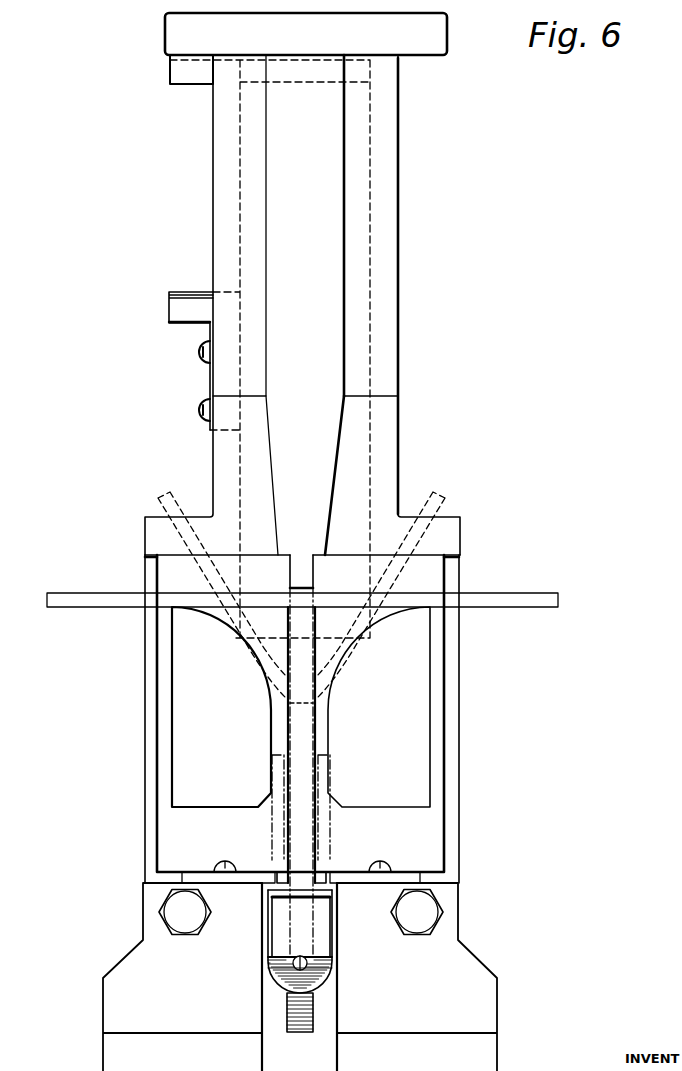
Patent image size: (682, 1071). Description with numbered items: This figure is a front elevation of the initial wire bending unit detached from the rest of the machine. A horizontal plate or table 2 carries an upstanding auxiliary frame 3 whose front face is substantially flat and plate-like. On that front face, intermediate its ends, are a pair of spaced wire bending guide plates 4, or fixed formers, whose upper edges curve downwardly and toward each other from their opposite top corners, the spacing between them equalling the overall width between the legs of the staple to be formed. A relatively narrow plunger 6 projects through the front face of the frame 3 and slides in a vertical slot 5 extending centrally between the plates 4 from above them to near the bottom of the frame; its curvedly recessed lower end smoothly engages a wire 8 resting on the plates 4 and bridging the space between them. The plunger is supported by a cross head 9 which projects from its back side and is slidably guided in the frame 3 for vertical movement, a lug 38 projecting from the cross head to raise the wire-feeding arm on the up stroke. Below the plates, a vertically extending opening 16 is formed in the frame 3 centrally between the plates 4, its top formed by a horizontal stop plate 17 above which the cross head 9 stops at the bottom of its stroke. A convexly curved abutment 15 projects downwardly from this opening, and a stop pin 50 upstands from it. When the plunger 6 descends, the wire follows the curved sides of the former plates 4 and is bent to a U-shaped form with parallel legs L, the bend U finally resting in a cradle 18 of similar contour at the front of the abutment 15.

The horizontal plate or table 2 is at (57, 1070).
The auxiliary frame 3 is at (460, 811).
The wire bending guide plates 4 is at (185, 710).
The vertical slot 5 is at (288, 822).
The plunger 6 is at (302, 567).
The wire 8 is at (532, 598).
The cross head 9 is at (372, 440).
The convexly curved abutment 15 is at (326, 976).
The vertically extending opening 16 is at (300, 923).
The horizontal stop plate 17 is at (322, 891).
The cradle 18 is at (282, 986).
The lug 38 is at (183, 308).
The stop pin 50 is at (306, 962).
The parallel legs L is at (272, 846).
The bend U is at (268, 969).